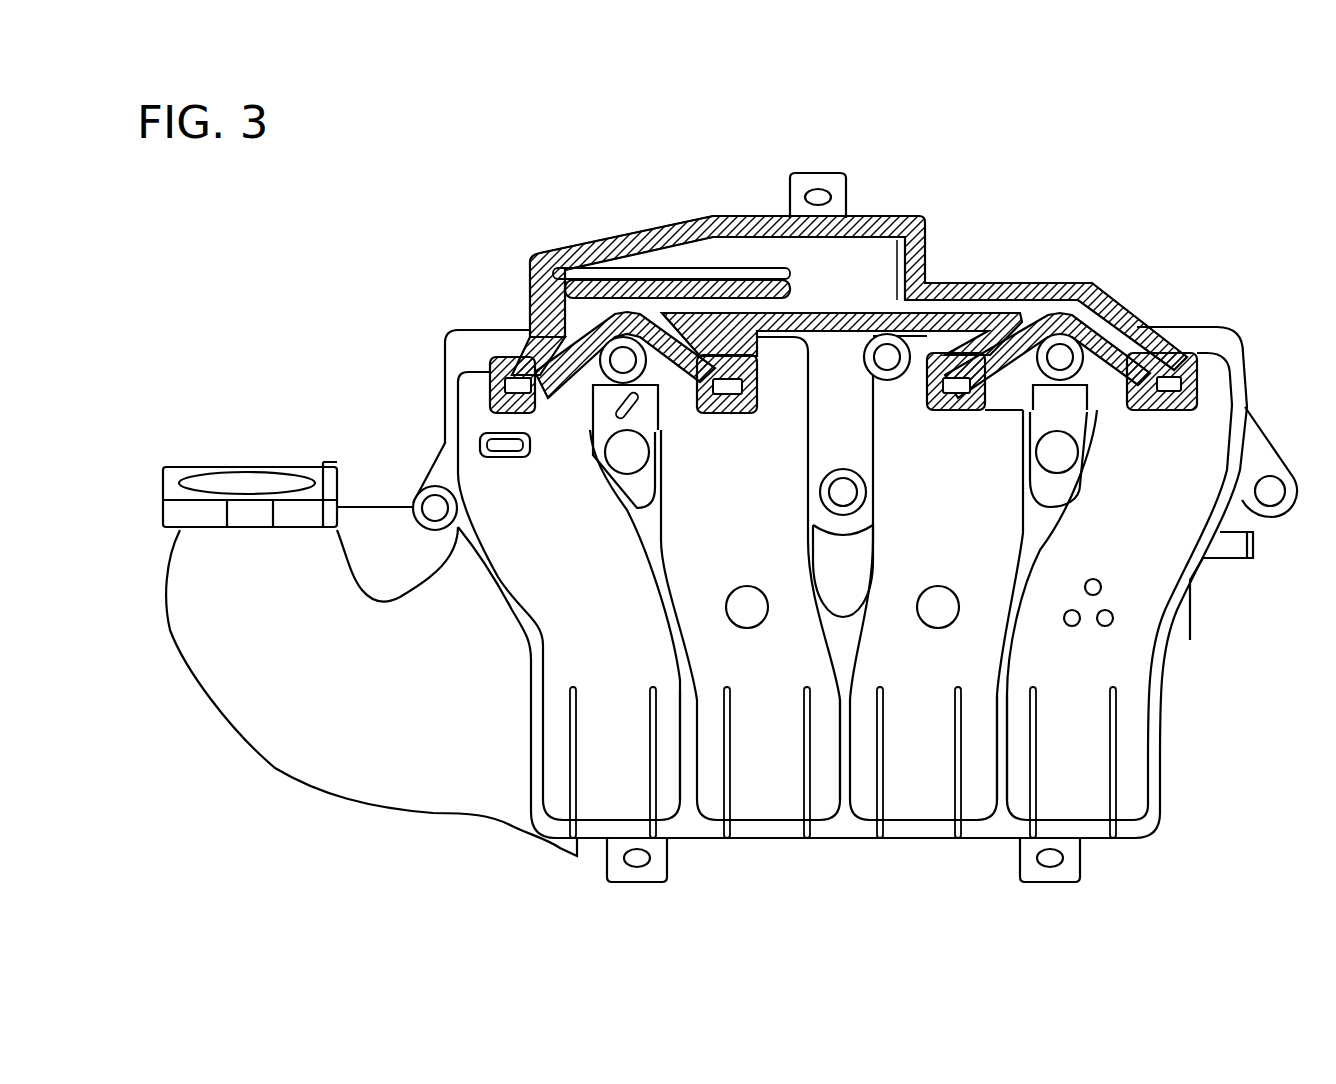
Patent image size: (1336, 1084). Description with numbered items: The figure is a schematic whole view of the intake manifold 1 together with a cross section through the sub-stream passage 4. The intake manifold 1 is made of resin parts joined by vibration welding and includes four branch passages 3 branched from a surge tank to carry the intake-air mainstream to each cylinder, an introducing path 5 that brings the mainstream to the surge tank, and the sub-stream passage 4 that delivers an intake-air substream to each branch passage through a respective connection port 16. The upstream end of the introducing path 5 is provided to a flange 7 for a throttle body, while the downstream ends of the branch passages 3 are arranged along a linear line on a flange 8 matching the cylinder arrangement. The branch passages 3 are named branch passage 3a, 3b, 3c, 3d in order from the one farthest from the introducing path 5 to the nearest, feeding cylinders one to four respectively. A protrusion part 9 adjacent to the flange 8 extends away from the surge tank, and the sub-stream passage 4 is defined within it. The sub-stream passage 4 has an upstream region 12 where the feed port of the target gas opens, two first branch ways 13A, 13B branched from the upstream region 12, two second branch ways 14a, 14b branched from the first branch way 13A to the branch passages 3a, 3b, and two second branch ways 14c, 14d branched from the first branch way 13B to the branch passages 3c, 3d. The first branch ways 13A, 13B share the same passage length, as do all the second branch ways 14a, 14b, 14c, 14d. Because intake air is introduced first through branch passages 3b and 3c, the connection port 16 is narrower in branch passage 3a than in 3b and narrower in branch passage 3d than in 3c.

The intake manifold 1 is at (228, 300).
The branch passages 3 is at (868, 624).
The branch passage 3a is at (1150, 560).
The branch passage 3b is at (917, 790).
The branch passage 3c is at (767, 790).
The branch passage 3d is at (553, 780).
The sub-stream passage 4 is at (873, 262).
The introducing path 5 is at (297, 733).
The flange 7 is at (187, 473).
The flange 8 is at (457, 352).
The protrusion part 9 is at (590, 247).
The upstream region 12 is at (853, 247).
The first branch way 13A is at (1003, 300).
The first branch way 13B is at (725, 305).
The second branch way 14a is at (1107, 330).
The second branch way 14b is at (970, 360).
The second branch way 14c is at (693, 333).
The second branch way 14d is at (573, 343).
The connection port 16 is at (520, 383).